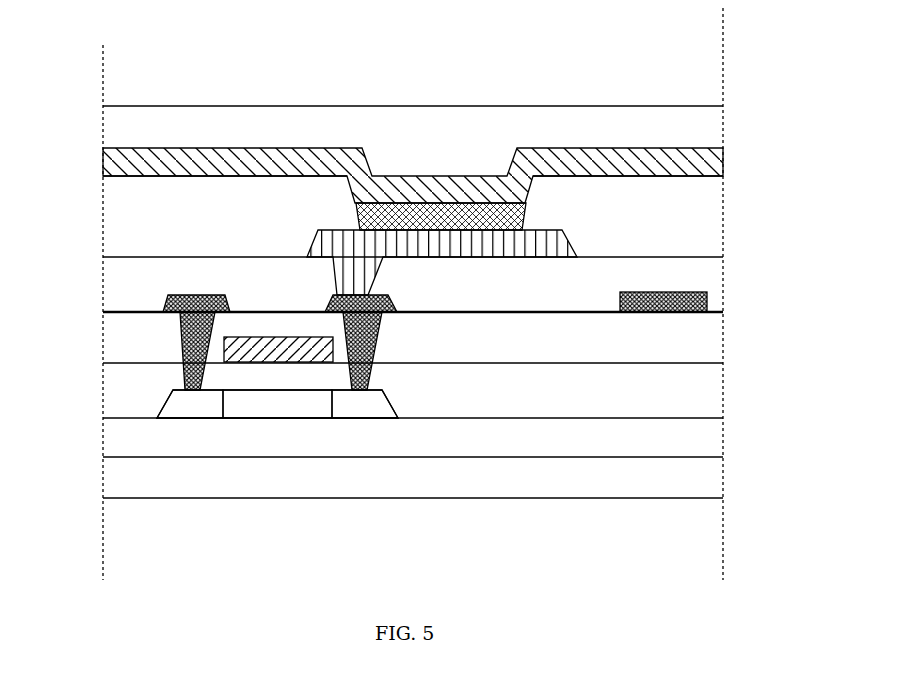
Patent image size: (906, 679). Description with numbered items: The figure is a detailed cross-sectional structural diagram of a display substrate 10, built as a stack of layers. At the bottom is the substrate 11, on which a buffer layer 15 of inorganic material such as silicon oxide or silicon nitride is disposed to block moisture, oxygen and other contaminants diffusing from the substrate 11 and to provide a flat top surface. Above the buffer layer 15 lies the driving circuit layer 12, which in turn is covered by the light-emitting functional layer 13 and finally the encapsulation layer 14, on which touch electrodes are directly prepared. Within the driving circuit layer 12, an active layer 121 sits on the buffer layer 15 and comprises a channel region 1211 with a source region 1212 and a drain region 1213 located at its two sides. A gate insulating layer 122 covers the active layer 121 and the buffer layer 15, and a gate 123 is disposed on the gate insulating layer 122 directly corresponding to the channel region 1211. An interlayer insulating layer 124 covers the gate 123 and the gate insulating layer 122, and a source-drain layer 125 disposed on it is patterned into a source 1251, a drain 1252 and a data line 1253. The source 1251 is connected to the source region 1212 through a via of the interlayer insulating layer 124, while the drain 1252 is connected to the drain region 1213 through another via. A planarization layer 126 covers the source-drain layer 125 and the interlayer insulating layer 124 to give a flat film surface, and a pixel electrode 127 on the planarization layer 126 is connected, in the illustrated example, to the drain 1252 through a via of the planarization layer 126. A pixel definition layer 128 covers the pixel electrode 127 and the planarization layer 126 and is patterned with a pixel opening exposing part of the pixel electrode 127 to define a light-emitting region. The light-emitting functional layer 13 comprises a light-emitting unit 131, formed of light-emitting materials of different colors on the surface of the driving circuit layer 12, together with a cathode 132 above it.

The display substrate 10 is at (230, 48).
The substrate 11 is at (697, 483).
The driving circuit layer 12 is at (62, 363).
The light-emitting functional layer 13 is at (413, 126).
The encapsulation layer 14 is at (697, 136).
The buffer layer 15 is at (697, 438).
The active layer 121 is at (287, 482).
The channel region 1211 is at (255, 405).
The source region 1212 is at (190, 405).
The drain region 1213 is at (375, 463).
The gate insulating layer 122 is at (695, 397).
The gate 123 is at (223, 347).
The interlayer insulating layer 124 is at (697, 343).
The source-drain layer 125 is at (412, 404).
The source 1251 is at (163, 305).
The drain 1252 is at (332, 297).
The data line 1253 is at (707, 302).
The planarization layer 126 is at (697, 268).
The pixel electrode 127 is at (335, 228).
The pixel definition layer 128 is at (697, 224).
The light-emitting unit 131 is at (404, 217).
The cathode 132 is at (488, 190).